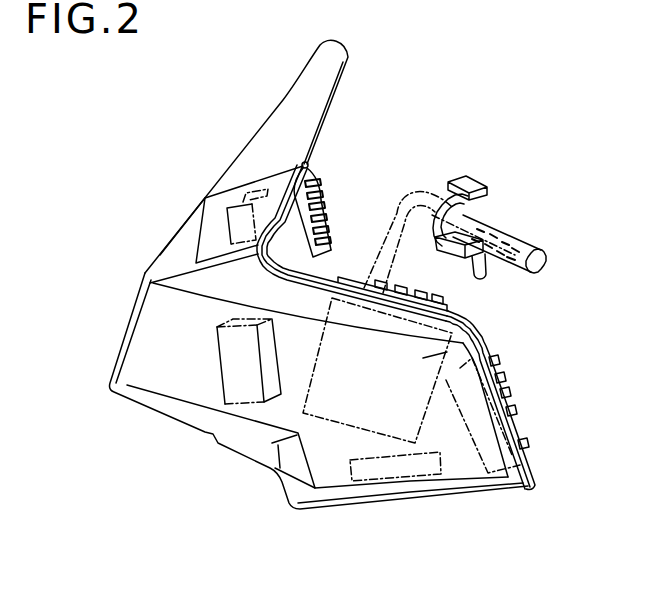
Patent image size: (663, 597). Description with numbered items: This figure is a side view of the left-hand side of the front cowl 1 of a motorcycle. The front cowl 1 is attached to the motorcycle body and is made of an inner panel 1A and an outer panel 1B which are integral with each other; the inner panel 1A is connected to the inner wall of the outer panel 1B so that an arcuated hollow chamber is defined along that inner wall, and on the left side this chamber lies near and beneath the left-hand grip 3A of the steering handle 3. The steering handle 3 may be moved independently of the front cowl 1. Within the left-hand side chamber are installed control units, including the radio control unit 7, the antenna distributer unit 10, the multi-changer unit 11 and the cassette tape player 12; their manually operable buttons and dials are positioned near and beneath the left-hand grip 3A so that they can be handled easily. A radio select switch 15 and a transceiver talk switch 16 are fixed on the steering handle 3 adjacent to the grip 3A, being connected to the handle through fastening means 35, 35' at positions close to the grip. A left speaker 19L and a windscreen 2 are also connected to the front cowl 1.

The front cowl 1 is at (150, 303).
The inner panel 1A is at (333, 279).
The outer panel 1B is at (520, 424).
The windscreen 2 is at (280, 112).
The steering handle 3 is at (397, 200).
The left-hand grip 3A is at (492, 218).
The radio control unit 7 is at (490, 408).
The antenna distributer unit 10 is at (432, 468).
The multi-changer unit 11 is at (228, 357).
The cassette tape player 12 is at (473, 337).
The radio select switch 15 is at (482, 177).
The transceiver talk switch 16 is at (458, 248).
The left speaker 19L is at (322, 195).
The fastening means 35 is at (472, 196).
The lower bracket 35' is at (431, 238).